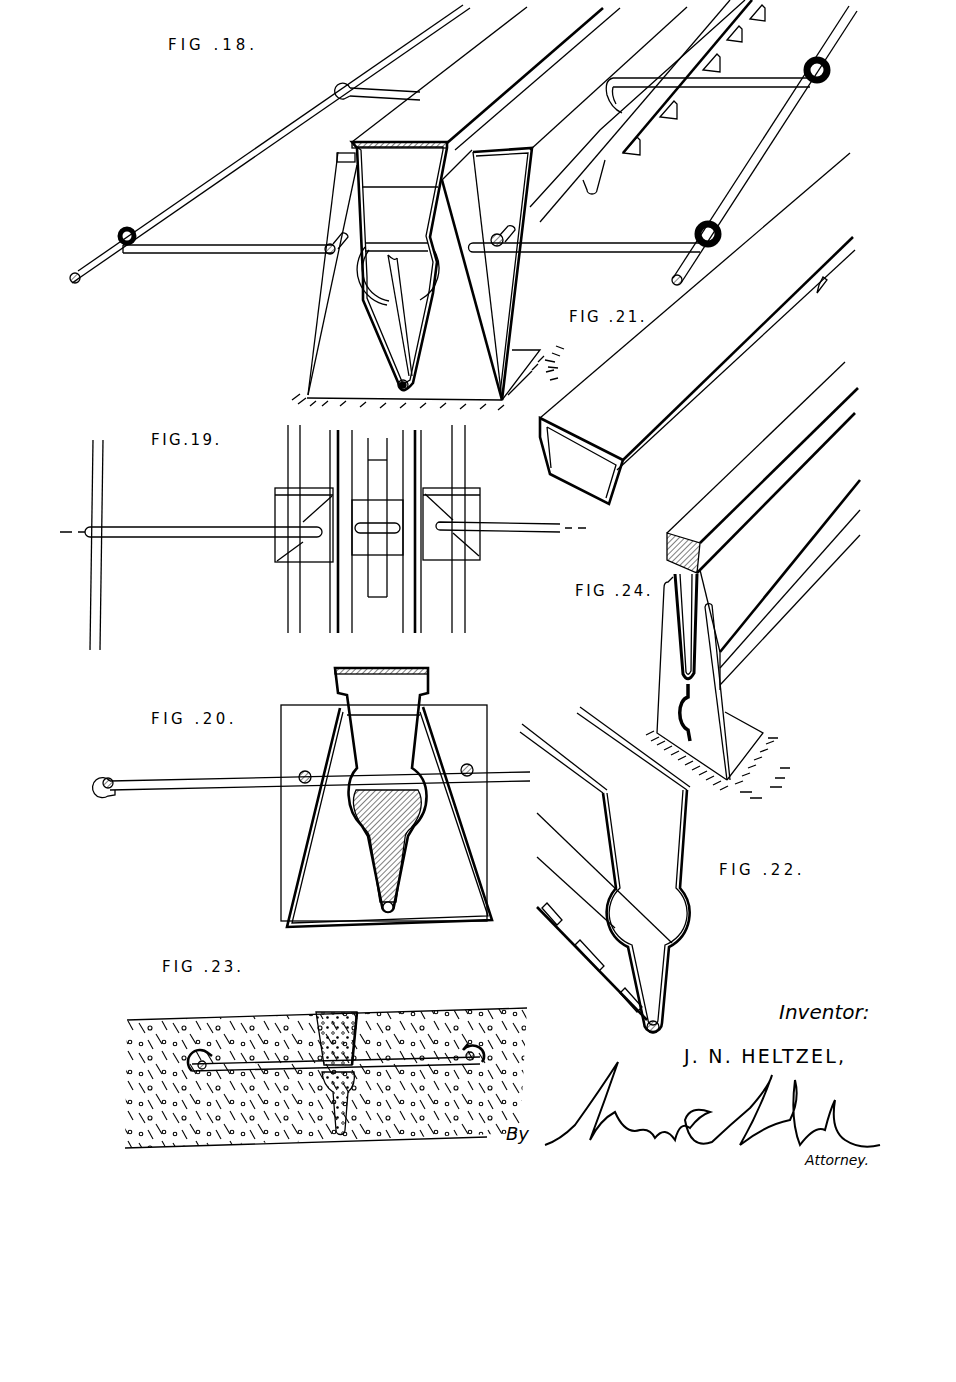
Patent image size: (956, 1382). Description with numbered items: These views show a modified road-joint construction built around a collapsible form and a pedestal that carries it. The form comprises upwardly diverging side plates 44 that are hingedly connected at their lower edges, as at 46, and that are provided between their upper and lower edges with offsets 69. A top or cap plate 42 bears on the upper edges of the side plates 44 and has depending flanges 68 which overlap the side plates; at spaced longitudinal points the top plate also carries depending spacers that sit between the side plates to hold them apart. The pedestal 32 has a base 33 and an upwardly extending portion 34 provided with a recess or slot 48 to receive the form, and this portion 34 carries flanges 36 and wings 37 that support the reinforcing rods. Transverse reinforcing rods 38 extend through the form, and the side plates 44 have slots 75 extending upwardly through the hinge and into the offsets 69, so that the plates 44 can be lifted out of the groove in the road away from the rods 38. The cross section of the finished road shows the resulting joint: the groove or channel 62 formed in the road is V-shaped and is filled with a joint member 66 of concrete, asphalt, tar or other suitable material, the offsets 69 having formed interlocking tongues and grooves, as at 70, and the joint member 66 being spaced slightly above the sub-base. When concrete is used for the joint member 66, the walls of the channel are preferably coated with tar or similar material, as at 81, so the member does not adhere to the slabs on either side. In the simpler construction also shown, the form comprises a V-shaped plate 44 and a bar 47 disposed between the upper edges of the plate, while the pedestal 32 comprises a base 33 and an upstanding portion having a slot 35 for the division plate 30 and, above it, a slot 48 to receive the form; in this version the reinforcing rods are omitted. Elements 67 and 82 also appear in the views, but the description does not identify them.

In FIG. 24, the division plate 30 is at (686, 728).
In FIG. 18, the pedestal 32 is at (302, 327).
In FIG. 19, the pedestal 32 is at (270, 566).
In FIG. 20, the pedestal 32 is at (270, 873).
In FIG. 24, the pedestal 32 is at (650, 673).
In FIG. 18, the base 33 is at (561, 365).
In FIG. 20, the base 33 is at (389, 817).
In FIG. 24, the base 33 is at (746, 741).
In FIG. 18, the upwardly extending portion 34 is at (425, 380).
In FIG. 24, the upwardly extending portion 34 is at (710, 697).
In FIG. 24, the slot 35 is at (711, 805).
In FIG. 18, the flanges 36 is at (485, 288).
In FIG. 19, the flanges 36 is at (470, 545).
In FIG. 20, the flanges 36 is at (440, 760).
In FIG. 18, the wings 37 is at (502, 274).
In FIG. 19, the wings 37 is at (478, 502).
In FIG. 20, the wings 37 is at (448, 711).
In FIG. 18, the transverse reinforcing rods 38 is at (618, 247).
In FIG. 19, the transverse reinforcing rods 38 is at (326, 548).
In FIG. 20, the transverse reinforcing rods 38 is at (247, 788).
In FIG. 23, the transverse reinforcing rods 38 is at (400, 1063).
In FIG. 18, the top or cap plate 42 is at (372, 122).
In FIG. 21, the top or cap plate 42 is at (715, 478).
In FIG. 18, the side plates 44 is at (399, 266).
In FIG. 19, the side plates 44 is at (347, 615).
In FIG. 20, the side plates 44 is at (381, 790).
In FIG. 24, the side plates 44 is at (778, 568).
In FIG. 22, the side plates 44 is at (680, 833).
In FIG. 18, the hinged connection 46 is at (383, 346).
In FIG. 22, the hinged connection 46 is at (661, 1016).
In FIG. 21, the bar 47 is at (683, 527).
In FIG. 24, the recess or slot 48 is at (676, 637).
In FIG. 23, the groove or channel 62 is at (360, 1030).
In FIG. 18, the joint member 66 is at (338, 160).
In FIG. 23, the joint member 66 is at (323, 1010).
In FIG. 18, the cap 67 is at (399, 134).
In FIG. 20, the cap 67 is at (405, 668).
In FIG. 21, the cap 67 is at (697, 328).
In FIG. 18, the depending flanges 68 is at (515, 88).
In FIG. 19, the depending flanges 68 is at (277, 537).
In FIG. 21, the depending flanges 68 is at (713, 378).
In FIG. 18, the offsets 69 is at (362, 257).
In FIG. 22, the offsets 69 is at (612, 913).
In FIG. 23, the interlocking tongues and grooves 70 is at (320, 1085).
In FIG. 18, the slots 75 is at (405, 302).
In FIG. 23, the tar coating 81 is at (355, 1010).
In FIG. 19, the spreader block 82 is at (372, 540).
In FIG. 20, the spreader block 82 is at (378, 845).